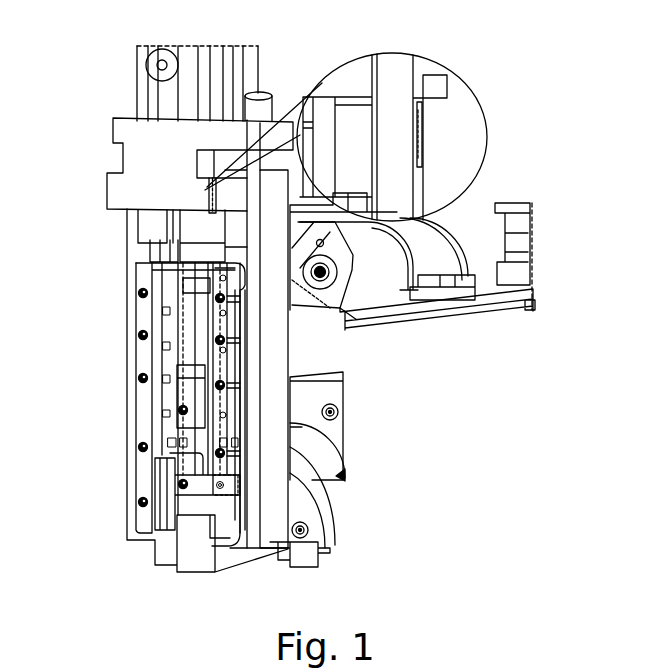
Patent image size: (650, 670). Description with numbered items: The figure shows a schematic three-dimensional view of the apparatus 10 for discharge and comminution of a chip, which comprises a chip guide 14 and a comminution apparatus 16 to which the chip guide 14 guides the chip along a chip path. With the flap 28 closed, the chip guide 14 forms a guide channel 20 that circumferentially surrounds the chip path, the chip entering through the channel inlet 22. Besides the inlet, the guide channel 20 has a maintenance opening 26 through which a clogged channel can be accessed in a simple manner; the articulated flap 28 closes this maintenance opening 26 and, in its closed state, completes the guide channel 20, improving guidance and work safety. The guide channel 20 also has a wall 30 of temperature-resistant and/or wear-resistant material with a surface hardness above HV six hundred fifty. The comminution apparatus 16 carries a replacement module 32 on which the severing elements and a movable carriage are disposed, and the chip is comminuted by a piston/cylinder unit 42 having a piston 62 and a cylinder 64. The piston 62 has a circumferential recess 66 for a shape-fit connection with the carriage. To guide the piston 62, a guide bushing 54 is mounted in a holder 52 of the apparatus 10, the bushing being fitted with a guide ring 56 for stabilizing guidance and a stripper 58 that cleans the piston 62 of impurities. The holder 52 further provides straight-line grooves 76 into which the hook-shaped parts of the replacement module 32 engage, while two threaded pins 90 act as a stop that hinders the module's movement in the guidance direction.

The apparatus 10 is at (60, 231).
The chip guide 14 is at (360, 482).
The comminution apparatus 16 is at (106, 480).
The guide channel 20 is at (316, 461).
The channel inlet 22 is at (336, 507).
The maintenance opening 26 is at (345, 467).
The flap 28 is at (401, 276).
The wall 30 is at (300, 427).
The replacement module 32 is at (274, 534).
The piston/cylinder unit 42 is at (97, 95).
The holder 52 is at (118, 137).
The guide bushing 54 is at (422, 100).
The guide ring 56 is at (422, 136).
The stripper 58 is at (422, 162).
The piston 62 is at (200, 237).
The cylinder 64 is at (143, 61).
The circumferential recess 66 is at (200, 273).
The straight-line grooves 76 is at (222, 158).
The threaded pins 90 is at (265, 92).